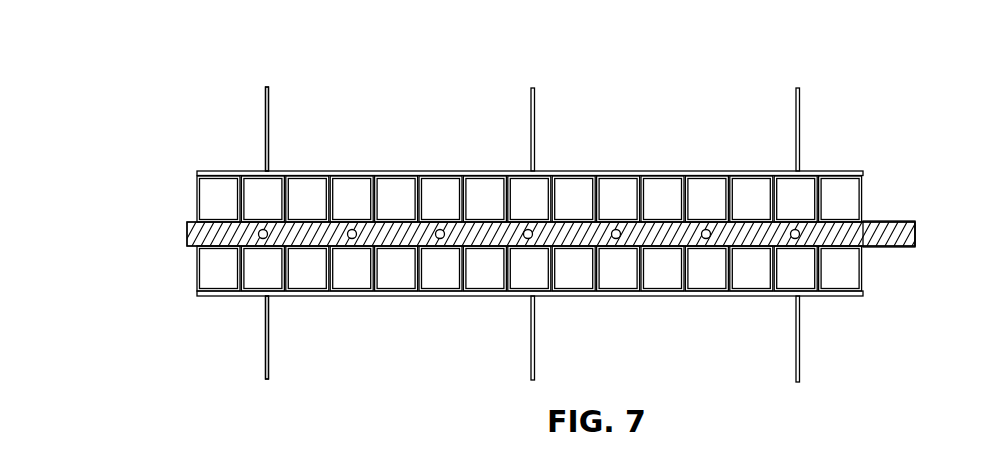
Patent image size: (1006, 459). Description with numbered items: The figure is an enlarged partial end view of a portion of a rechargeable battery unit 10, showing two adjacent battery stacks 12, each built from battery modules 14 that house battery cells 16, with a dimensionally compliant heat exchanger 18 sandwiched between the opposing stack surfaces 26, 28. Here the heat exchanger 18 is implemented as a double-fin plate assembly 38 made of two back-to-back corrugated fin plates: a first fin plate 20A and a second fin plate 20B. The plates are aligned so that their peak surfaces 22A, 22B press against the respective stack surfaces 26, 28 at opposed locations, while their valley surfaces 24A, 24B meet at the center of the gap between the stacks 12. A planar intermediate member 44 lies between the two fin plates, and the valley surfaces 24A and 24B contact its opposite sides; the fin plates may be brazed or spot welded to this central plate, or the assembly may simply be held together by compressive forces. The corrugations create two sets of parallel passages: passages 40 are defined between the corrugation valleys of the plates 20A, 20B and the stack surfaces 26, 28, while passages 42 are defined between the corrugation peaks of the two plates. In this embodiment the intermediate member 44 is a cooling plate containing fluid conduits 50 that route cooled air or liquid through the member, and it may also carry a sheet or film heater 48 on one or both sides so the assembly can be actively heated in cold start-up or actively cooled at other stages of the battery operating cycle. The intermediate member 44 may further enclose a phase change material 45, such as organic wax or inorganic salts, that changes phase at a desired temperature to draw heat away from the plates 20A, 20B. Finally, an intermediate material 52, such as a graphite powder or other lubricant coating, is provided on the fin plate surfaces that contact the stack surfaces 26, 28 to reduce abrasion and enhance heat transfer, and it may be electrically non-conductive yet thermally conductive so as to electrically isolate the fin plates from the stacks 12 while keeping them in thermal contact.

The rechargeable battery unit 10 is at (580, 180).
The battery stack 12 is at (212, 82).
The battery module 14 is at (490, 97).
The battery cell 16 is at (408, 137).
The heat exchanger 18 is at (507, 229).
The double-fin plate assembly 38 is at (551, 234).
The first fin plate 20A is at (863, 203).
The second fin plate 20B is at (863, 268).
The peak surface of first fin plate 22A is at (298, 174).
The peak surface of second fin plate 22B is at (305, 296).
The valley surface of first fin plate 24A is at (268, 218).
The valley surface of second fin plate 24B is at (264, 252).
The stack surface 26 is at (350, 178).
The stack surface 28 is at (350, 290).
The air or fluid passage 40 is at (631, 208).
The air or fluid passage 42 is at (676, 208).
The planar intermediate member 44 is at (838, 232).
The phase change material 45 is at (526, 229).
The film heater 48 is at (483, 222).
The fluid conduit 50 is at (437, 229).
The intermediate material 52 is at (567, 172).